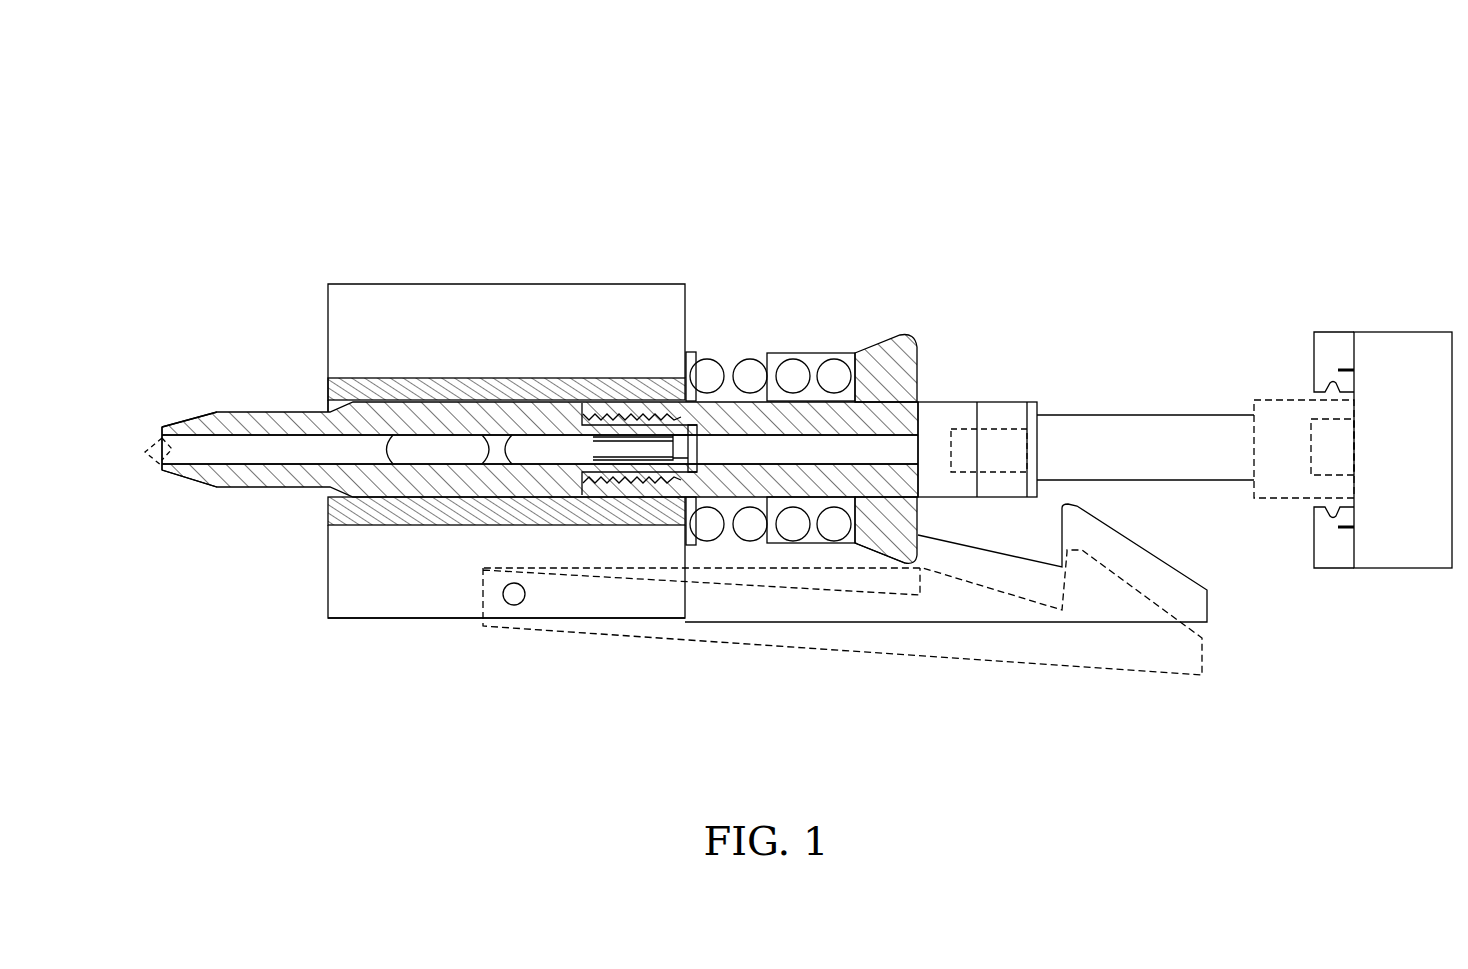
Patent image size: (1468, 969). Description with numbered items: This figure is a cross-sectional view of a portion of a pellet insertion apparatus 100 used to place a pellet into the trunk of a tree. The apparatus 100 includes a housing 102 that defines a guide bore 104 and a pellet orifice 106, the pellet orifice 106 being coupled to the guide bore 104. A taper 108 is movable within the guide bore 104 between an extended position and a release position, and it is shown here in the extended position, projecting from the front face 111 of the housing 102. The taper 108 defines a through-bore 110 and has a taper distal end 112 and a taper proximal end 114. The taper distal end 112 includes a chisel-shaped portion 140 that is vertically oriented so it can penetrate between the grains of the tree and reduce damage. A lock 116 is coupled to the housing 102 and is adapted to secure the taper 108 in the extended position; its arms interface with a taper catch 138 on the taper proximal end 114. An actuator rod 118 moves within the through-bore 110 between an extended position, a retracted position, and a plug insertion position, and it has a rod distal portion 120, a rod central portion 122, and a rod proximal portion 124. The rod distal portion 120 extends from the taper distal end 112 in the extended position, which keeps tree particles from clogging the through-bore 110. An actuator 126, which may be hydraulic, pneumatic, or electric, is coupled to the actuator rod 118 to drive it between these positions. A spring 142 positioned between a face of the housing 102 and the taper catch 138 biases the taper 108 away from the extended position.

The pellet insertion apparatus 100 is at (1142, 111).
The housing 102 is at (510, 305).
The guide bore 104 is at (403, 400).
The pellet orifice 106 is at (507, 462).
The taper 108 is at (275, 422).
The through-bore 110 is at (370, 483).
The front face 111 is at (328, 566).
The taper distal end 112 is at (206, 420).
The taper proximal end 114 is at (900, 358).
The lock 116 is at (1096, 680).
The actuator rod 118 is at (1187, 432).
The rod distal portion 120 is at (166, 445).
The rod central portion 122 is at (1181, 462).
The rod proximal portion 124 is at (1270, 480).
The actuator 126 is at (1388, 547).
The taper catch 138 is at (912, 553).
The chisel-shaped portion 140 is at (240, 482).
The spring 142 is at (745, 540).